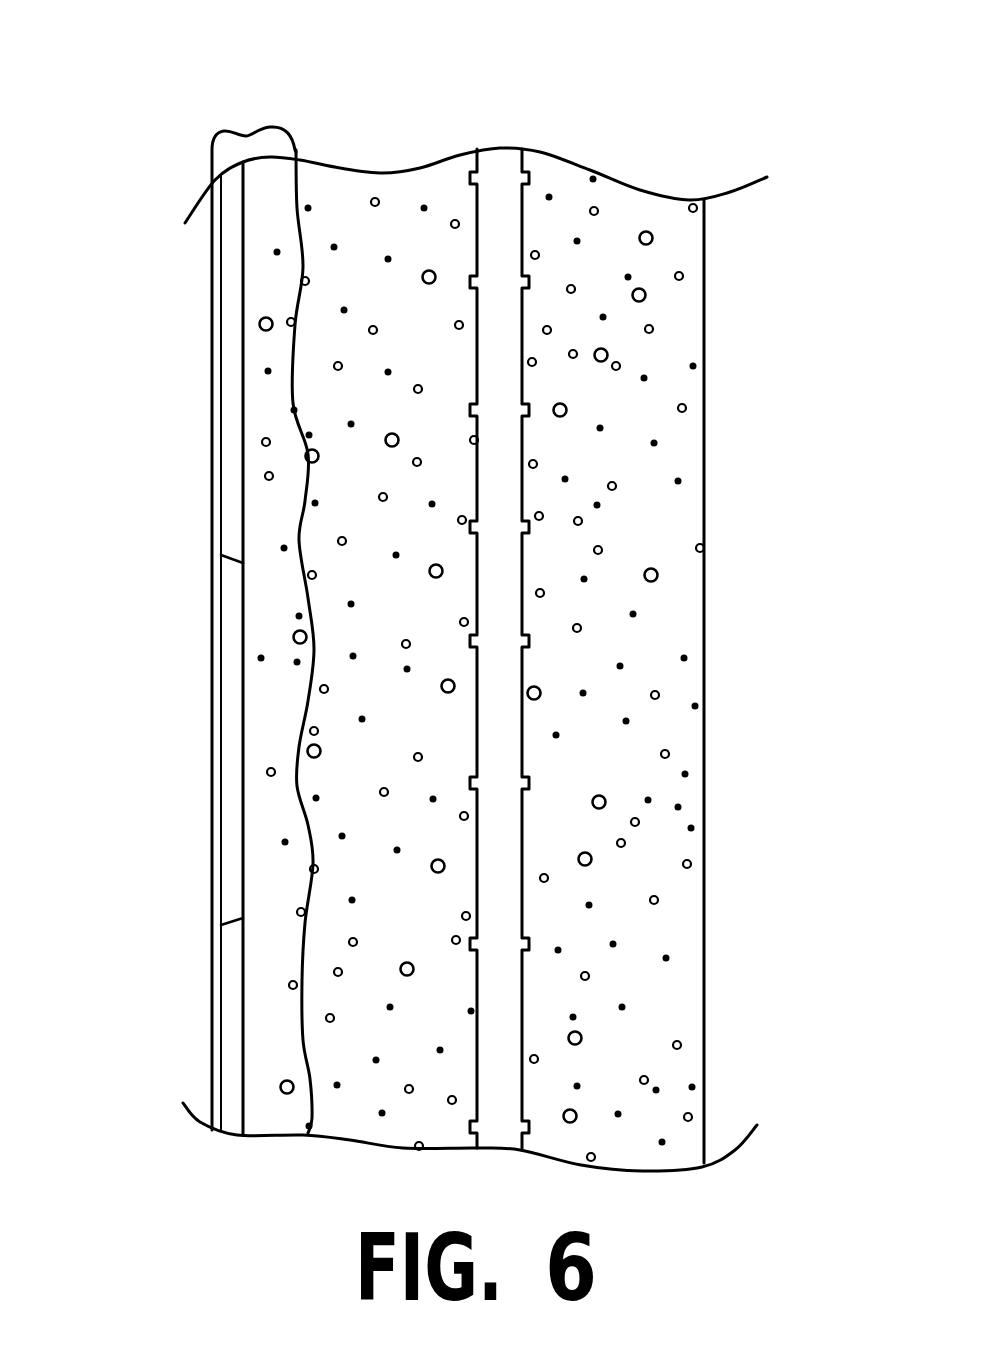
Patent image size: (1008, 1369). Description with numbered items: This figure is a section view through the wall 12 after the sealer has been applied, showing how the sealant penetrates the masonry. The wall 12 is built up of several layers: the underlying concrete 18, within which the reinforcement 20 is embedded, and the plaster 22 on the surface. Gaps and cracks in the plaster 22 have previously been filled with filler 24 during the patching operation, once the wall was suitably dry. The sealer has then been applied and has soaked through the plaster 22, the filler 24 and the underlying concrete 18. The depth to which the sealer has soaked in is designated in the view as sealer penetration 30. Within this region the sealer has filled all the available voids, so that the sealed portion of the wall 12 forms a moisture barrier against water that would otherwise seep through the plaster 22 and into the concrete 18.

The wall 12 is at (409, 98).
The concrete 18 is at (677, 336).
The reinforcement 20 is at (500, 608).
The plaster 22 is at (223, 438).
The filler 24 is at (222, 738).
The sealer penetration 30 is at (250, 128).